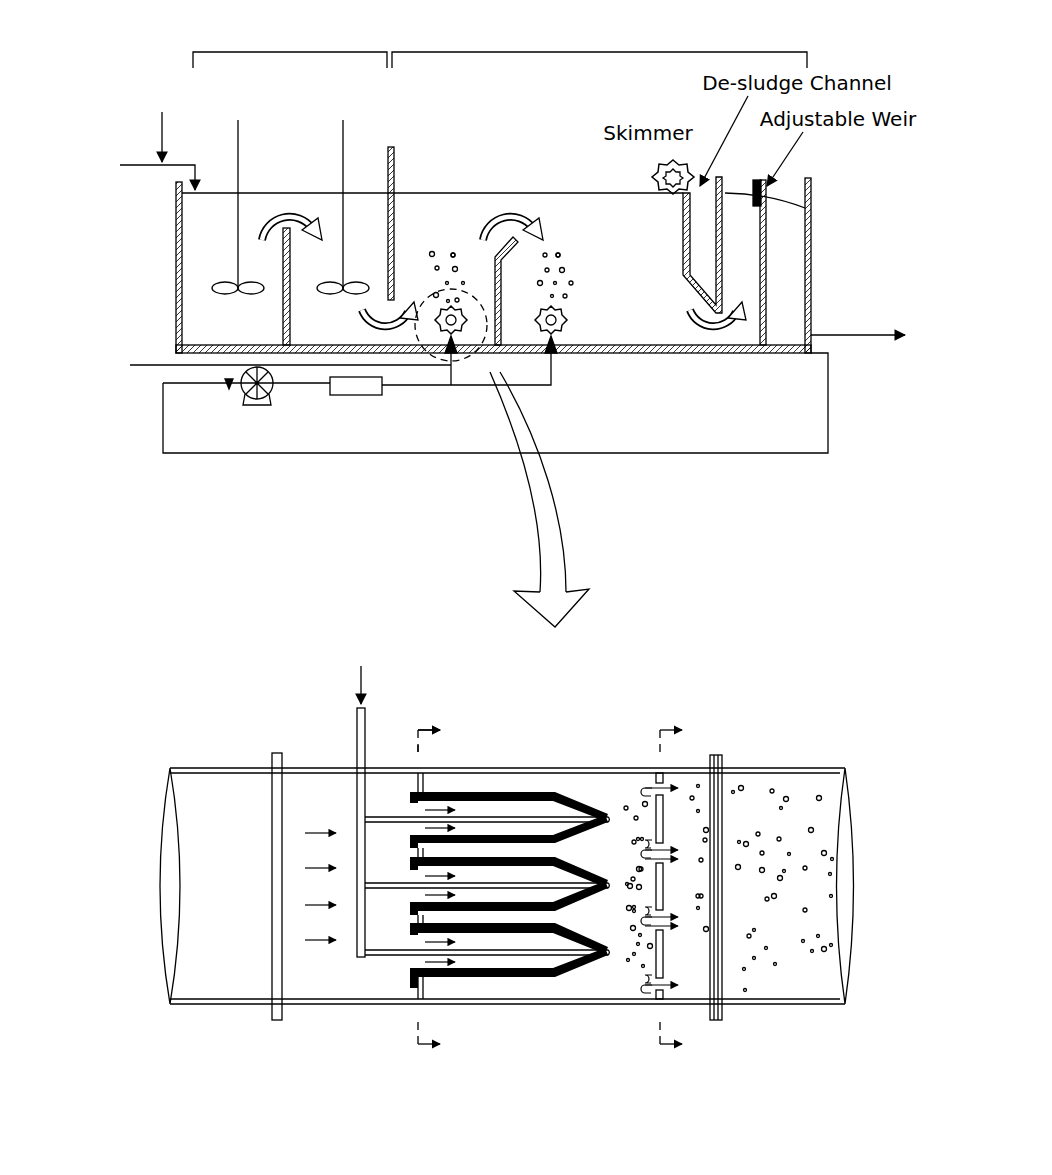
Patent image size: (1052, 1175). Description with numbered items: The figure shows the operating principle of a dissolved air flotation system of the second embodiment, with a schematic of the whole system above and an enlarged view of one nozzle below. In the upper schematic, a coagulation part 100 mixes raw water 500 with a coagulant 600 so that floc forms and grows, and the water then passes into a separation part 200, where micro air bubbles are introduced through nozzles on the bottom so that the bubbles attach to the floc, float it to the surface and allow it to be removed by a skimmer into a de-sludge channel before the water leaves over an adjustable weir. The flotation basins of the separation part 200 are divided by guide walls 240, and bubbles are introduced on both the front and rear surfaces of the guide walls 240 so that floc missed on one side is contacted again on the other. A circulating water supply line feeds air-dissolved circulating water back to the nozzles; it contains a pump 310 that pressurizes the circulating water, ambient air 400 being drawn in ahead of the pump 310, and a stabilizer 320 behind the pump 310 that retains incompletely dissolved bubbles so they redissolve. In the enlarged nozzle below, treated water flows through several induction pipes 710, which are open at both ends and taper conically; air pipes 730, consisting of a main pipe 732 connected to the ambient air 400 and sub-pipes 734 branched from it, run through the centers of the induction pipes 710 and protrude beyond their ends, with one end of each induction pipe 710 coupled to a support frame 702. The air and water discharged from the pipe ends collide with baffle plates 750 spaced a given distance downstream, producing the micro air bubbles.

The coagulation part 100 is at (290, 52).
The separation part 200 is at (598, 52).
The coagulant 600 is at (156, 111).
The raw water 500 is at (107, 175).
The guide walls 240 is at (501, 283).
The ambient air 400 is at (232, 375).
The pump 310 is at (258, 400).
The stabilizer 320 is at (355, 397).
The air pipes 730 is at (486, 881).
The main pipe 732 is at (365, 717).
The sub-pipes 734 is at (548, 820).
The induction pipes 710 is at (527, 795).
The support frames 702 is at (428, 990).
The baffle plates 750 is at (665, 875).